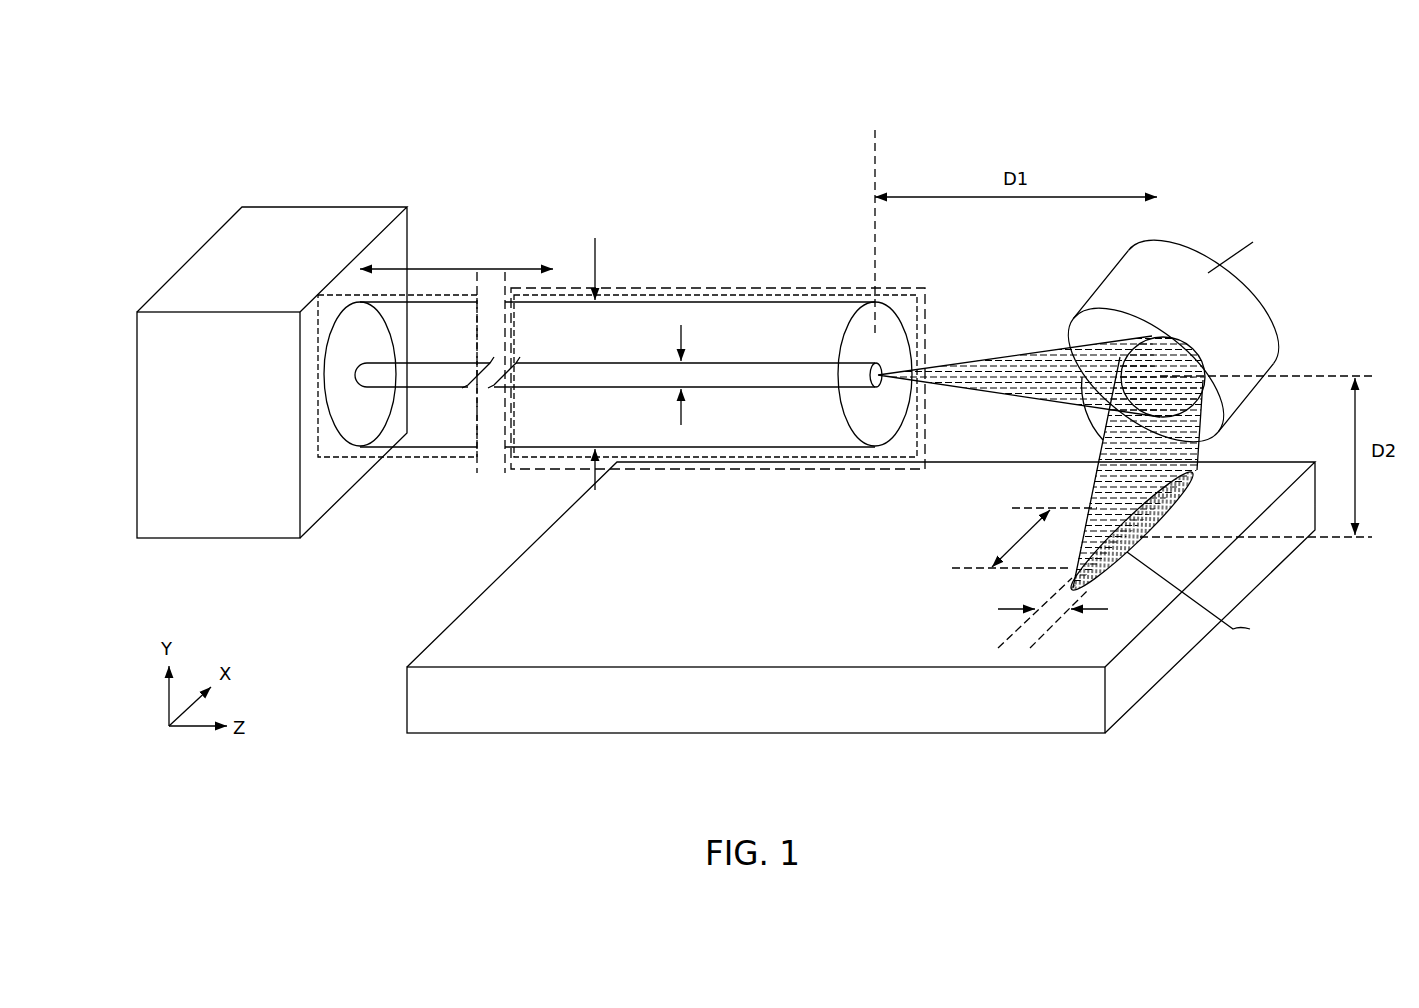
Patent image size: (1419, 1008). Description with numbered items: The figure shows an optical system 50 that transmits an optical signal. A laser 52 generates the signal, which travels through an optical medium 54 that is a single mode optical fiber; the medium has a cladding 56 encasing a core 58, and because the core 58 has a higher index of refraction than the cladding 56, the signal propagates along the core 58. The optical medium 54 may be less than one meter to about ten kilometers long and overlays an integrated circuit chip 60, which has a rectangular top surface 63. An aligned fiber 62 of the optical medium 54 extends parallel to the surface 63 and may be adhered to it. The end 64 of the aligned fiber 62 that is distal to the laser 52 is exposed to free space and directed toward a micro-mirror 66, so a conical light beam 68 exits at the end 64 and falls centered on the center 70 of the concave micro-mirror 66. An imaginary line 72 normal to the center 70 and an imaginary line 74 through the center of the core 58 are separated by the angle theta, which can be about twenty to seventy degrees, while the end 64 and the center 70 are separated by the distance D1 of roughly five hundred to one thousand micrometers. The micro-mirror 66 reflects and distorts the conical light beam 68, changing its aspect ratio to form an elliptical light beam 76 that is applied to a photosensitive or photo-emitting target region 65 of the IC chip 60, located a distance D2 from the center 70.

The optical system 50 is at (163, 133).
The laser 52 is at (137, 423).
The optical medium 54 is at (765, 295).
The cladding 56 is at (817, 312).
The core 58 is at (600, 370).
The integrated circuit (IC) chip 60 is at (757, 735).
The aligned fiber 62 is at (720, 288).
The surface 63 is at (876, 657).
The end 64 is at (893, 407).
The target region 65 is at (1128, 547).
The micro-mirror 66 is at (1250, 307).
The conical light beam 68 is at (975, 362).
The center 70 is at (1143, 397).
The imaginary line 72 is at (1094, 446).
The imaginary line 74 is at (1037, 377).
The elliptical light beam 76 is at (1197, 432).